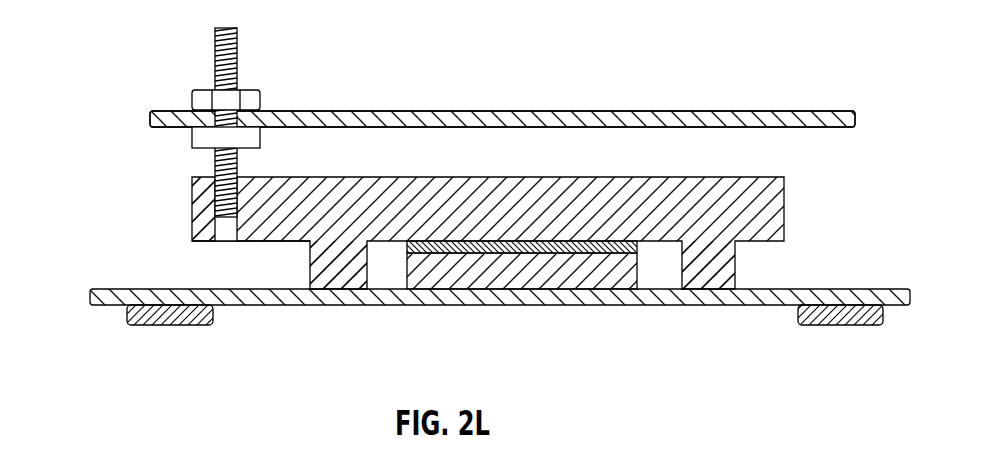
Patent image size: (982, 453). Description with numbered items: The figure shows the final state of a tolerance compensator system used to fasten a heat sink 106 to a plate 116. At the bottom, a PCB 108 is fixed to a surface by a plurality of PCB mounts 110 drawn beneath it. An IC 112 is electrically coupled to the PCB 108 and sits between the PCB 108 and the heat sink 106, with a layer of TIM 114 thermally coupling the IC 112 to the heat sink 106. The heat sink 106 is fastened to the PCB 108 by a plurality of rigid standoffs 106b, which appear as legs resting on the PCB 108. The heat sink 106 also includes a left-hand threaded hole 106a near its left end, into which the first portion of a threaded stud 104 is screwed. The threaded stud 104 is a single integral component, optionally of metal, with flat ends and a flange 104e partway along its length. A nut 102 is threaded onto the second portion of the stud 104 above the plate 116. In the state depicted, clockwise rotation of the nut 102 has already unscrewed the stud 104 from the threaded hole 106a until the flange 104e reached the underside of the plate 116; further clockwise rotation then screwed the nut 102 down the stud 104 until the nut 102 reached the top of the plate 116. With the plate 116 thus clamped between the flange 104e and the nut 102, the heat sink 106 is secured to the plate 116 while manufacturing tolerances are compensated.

The nut 102 is at (209, 89).
The threaded stud 104 is at (238, 72).
The flange 104e is at (260, 137).
The plate 116 is at (150, 120).
The heat sink 106 is at (780, 208).
The left-hand threaded hole 106a is at (222, 237).
The rigid standoffs 106b is at (325, 247).
The PCB 108 is at (90, 292).
The PCB mounts 110 is at (157, 312).
The IC 112 is at (487, 280).
The TIM 114 is at (470, 255).